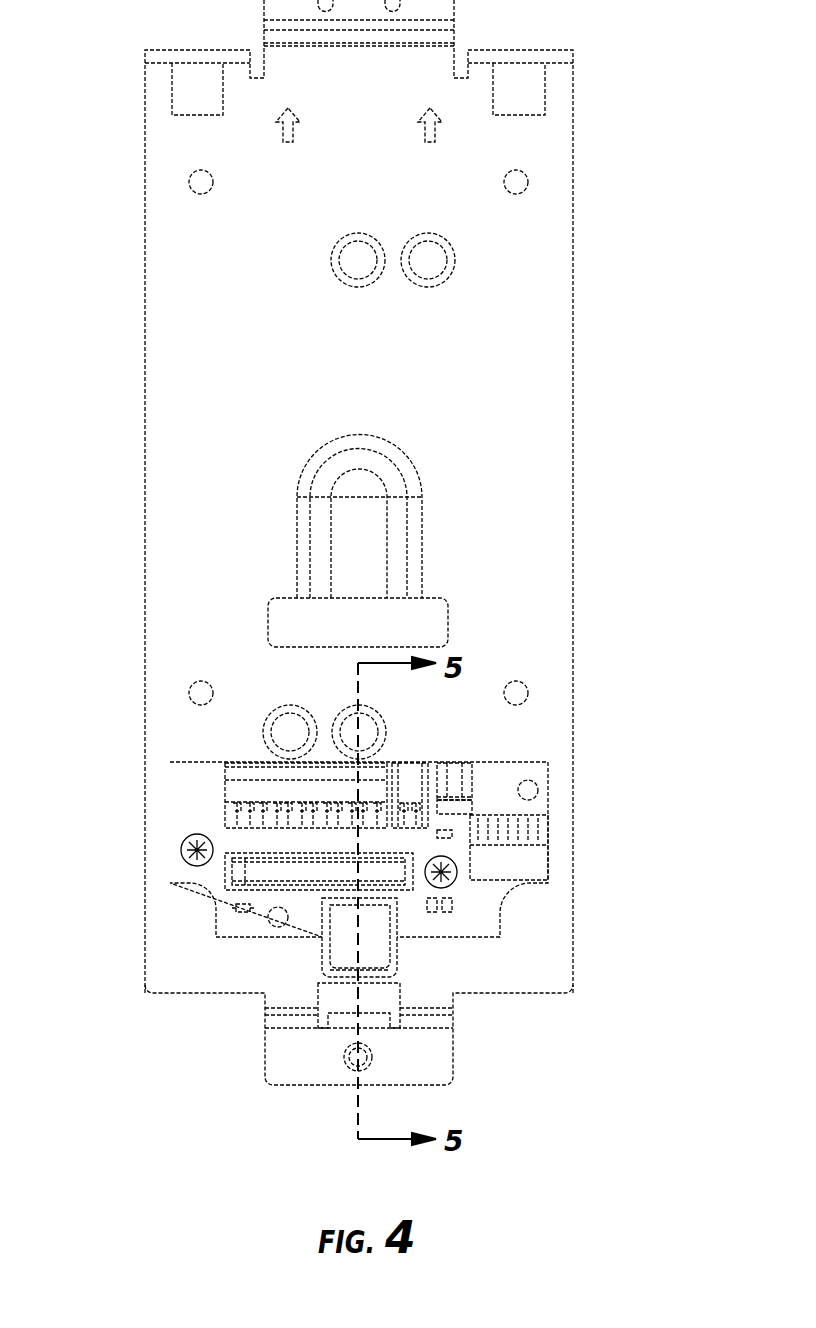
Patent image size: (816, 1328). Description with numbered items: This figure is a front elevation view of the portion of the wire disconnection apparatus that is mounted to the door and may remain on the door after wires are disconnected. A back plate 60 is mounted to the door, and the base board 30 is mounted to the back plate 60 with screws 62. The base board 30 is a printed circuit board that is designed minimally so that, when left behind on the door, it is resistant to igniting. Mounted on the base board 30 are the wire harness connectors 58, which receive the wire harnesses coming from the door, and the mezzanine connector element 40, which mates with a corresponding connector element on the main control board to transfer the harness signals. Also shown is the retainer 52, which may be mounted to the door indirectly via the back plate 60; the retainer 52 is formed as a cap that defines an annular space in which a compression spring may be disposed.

The back plate 60 is at (546, 338).
The base board 30 is at (531, 770).
The wire harness connectors 58 is at (241, 788).
The screws 62 is at (190, 840).
The mezzanine connector element 40 is at (262, 872).
The retainer 52 is at (345, 957).